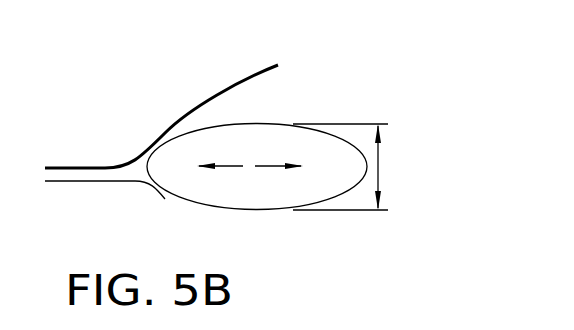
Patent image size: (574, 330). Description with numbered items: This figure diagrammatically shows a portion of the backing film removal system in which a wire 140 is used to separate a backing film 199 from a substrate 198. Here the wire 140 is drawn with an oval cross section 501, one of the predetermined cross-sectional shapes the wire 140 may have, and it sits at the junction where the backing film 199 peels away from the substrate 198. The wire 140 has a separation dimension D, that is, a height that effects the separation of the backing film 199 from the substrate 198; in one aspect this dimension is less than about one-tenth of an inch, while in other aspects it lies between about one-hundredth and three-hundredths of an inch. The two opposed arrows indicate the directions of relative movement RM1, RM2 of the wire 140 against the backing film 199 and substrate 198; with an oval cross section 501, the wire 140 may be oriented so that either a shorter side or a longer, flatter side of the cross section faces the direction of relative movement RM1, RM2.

The substrate 198 is at (212, 90).
The backing film 199 is at (100, 181).
The wire 140 is at (247, 123).
The oval cross section 501 is at (176, 208).
The direction of relative movement RM1 is at (228, 167).
The direction of relative movement RM2 is at (270, 168).
The separation dimension D is at (378, 165).